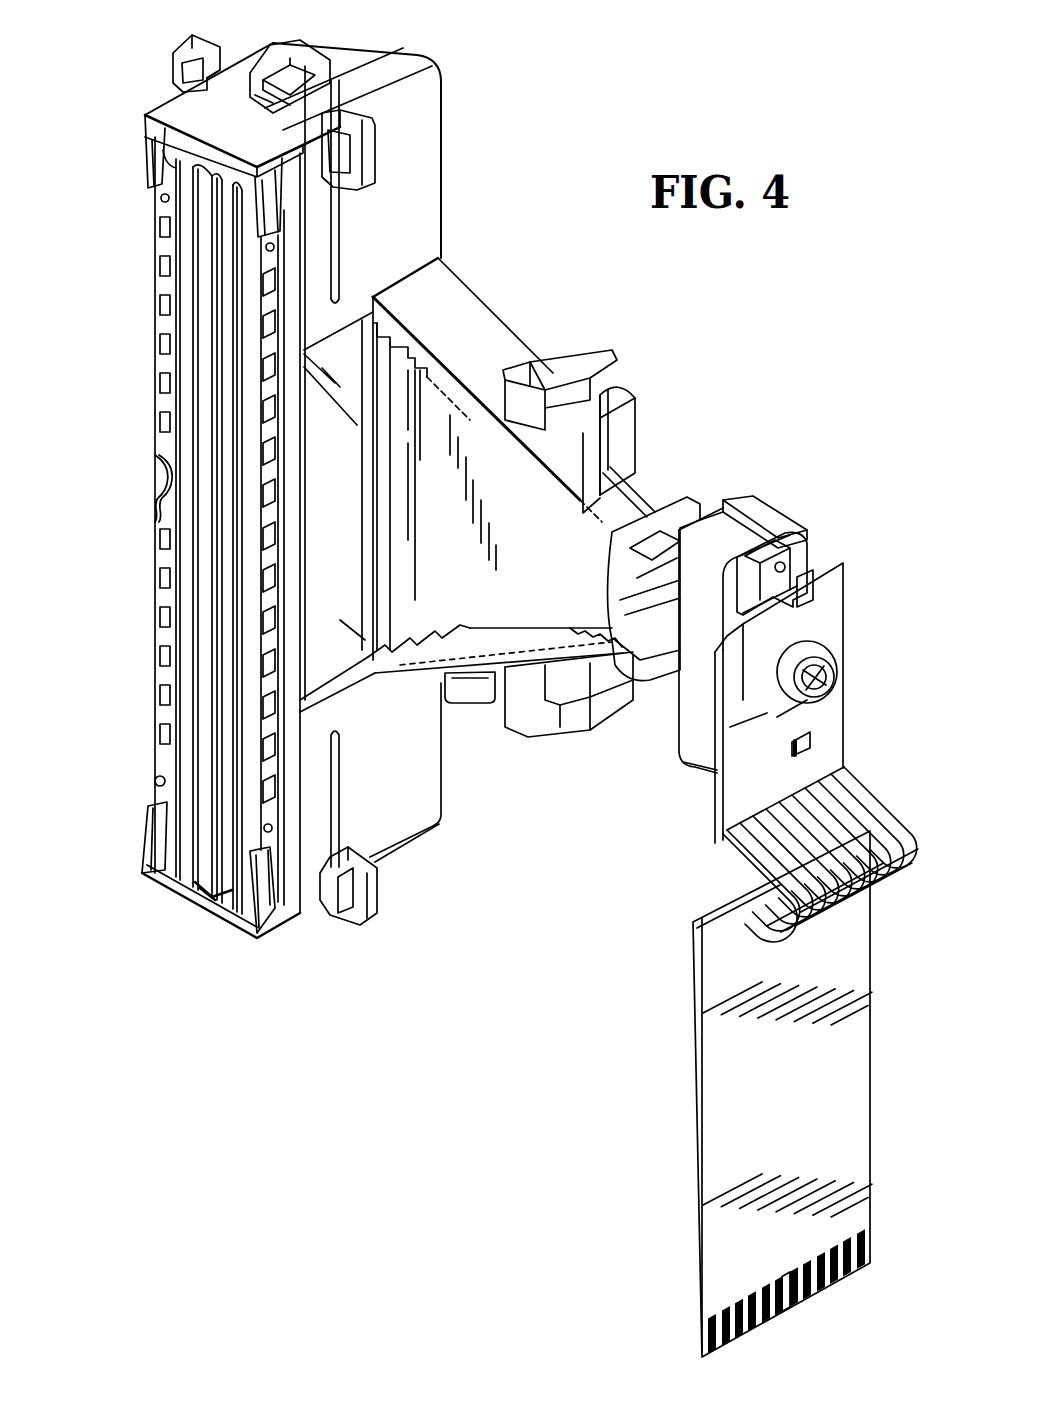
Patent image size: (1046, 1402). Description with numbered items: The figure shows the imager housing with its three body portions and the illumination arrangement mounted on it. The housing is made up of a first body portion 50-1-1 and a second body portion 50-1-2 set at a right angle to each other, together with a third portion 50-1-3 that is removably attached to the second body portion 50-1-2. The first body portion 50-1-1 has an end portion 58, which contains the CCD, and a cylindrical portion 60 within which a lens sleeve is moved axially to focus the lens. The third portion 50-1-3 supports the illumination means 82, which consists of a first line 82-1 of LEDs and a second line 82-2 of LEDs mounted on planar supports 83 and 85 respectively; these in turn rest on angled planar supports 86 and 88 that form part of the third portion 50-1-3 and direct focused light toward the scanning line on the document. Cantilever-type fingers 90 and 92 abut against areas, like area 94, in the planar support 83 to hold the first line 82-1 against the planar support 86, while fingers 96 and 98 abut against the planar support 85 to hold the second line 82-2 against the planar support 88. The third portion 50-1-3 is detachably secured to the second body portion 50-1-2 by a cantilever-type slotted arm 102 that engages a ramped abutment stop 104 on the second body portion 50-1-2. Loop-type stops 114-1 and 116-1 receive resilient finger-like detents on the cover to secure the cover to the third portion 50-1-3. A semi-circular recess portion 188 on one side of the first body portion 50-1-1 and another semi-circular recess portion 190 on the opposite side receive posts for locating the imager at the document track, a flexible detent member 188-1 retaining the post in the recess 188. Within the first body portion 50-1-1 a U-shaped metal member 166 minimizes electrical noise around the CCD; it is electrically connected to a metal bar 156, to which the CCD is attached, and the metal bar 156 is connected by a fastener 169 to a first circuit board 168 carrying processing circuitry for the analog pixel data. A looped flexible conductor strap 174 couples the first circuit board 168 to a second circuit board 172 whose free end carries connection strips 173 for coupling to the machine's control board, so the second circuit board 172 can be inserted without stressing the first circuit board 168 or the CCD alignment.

The third housing portion 50-1-3 is at (186, 114).
The second body portion 50-1-2 is at (398, 220).
The first body portion 50-1-1 is at (450, 592).
The loop-type stop 114-1 is at (175, 56).
The loop-type stop 116-1 is at (373, 893).
The ramped abutment stop 104 is at (295, 55).
The cantilever-type slotted arm 102 is at (405, 50).
The cantilever-type finger 90 is at (147, 141).
The finger 96 is at (253, 212).
The illumination means 82 is at (183, 412).
The first line of LEDs 82-1 is at (182, 294).
The second line of LEDs 82-2 is at (225, 322).
The planar support 83 is at (160, 713).
The planar support 85 is at (263, 777).
The planar support 86 is at (157, 490).
The planar support 88 is at (290, 690).
The cantilever-type finger 92 is at (152, 833).
The area 94 is at (157, 780).
The finger 98 is at (247, 913).
The semi-circular recess portion 190 is at (570, 685).
The semi-circular recess portion 188 is at (613, 407).
The flexible detent member 188-1 is at (566, 390).
The cylindrical portion 60 is at (620, 595).
The end portion 58 is at (763, 518).
The U-shaped metal member 166 is at (740, 567).
The metal bar 156 is at (773, 540).
The first circuit board 168 is at (833, 613).
The fastener 169 is at (820, 673).
The flexible conductor strap 174 is at (773, 840).
The second circuit board 172 is at (710, 1098).
The connection strips 173 is at (728, 1298).